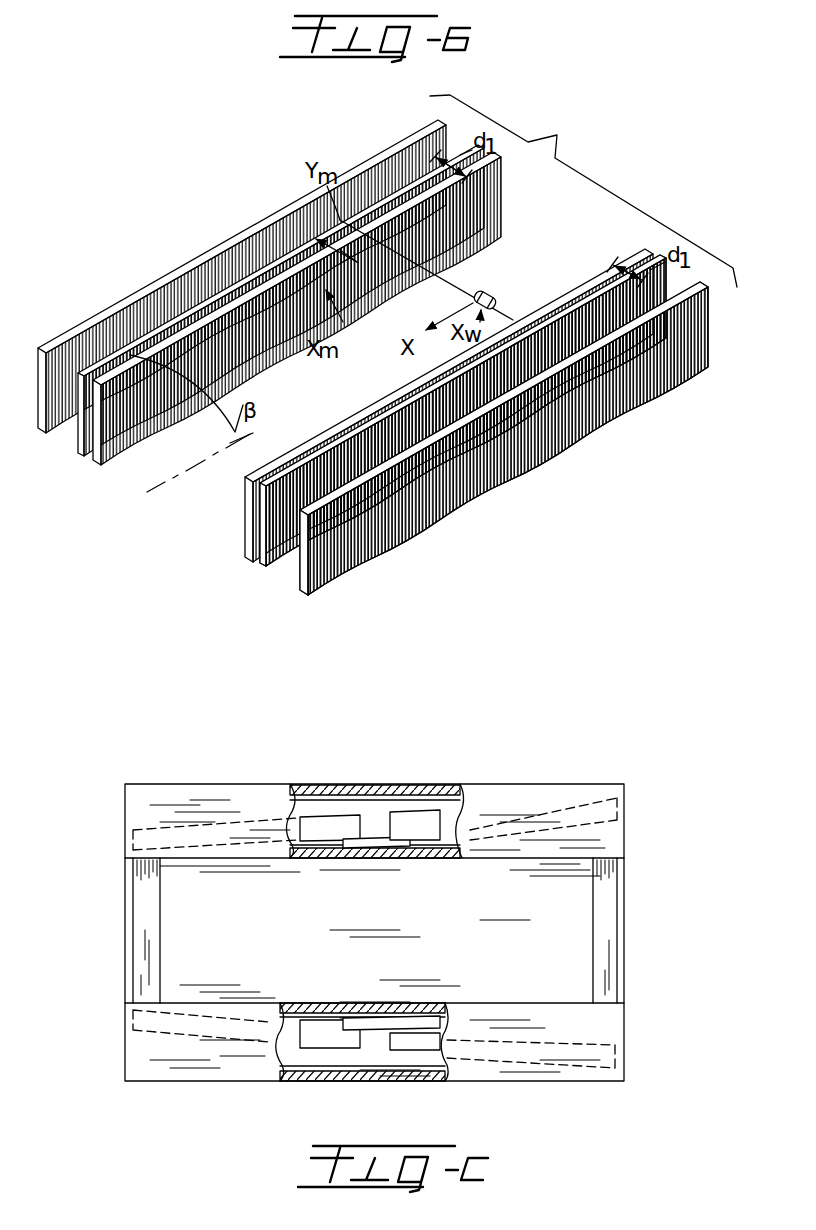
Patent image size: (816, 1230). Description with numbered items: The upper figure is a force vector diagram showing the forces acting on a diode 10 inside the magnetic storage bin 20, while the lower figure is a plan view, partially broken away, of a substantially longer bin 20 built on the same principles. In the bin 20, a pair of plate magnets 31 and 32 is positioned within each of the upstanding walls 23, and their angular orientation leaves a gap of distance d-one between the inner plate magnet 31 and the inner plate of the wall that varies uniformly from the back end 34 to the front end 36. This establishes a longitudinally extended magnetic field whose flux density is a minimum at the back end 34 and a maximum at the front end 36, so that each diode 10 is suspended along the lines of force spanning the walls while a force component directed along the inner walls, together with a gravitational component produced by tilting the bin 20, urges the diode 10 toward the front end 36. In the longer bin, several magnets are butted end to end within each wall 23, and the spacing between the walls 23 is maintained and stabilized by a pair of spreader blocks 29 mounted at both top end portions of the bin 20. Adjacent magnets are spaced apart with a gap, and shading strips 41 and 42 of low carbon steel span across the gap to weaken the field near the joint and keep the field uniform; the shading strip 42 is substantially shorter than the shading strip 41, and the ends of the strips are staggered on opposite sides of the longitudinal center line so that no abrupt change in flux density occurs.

In FIG. 6, the diode 10 is at (498, 287).
In FIG. 6, the magnetic storage bin 20 is at (583, 191).
In FIG. 6, the inner plate magnet 31 is at (432, 142).
In FIG. 6, the outer plate magnet 32 is at (370, 177).
In FIG. 6, the back end 34 is at (596, 210).
In FIG. 6, the front end 36 is at (227, 468).
In FIG. 7, the wall 23 is at (552, 783).
In FIG. 7, the spreader block 29 is at (140, 908).
In FIG. 7, the shading strip 41 is at (453, 862).
In FIG. 7, the shading strip 42 is at (368, 848).